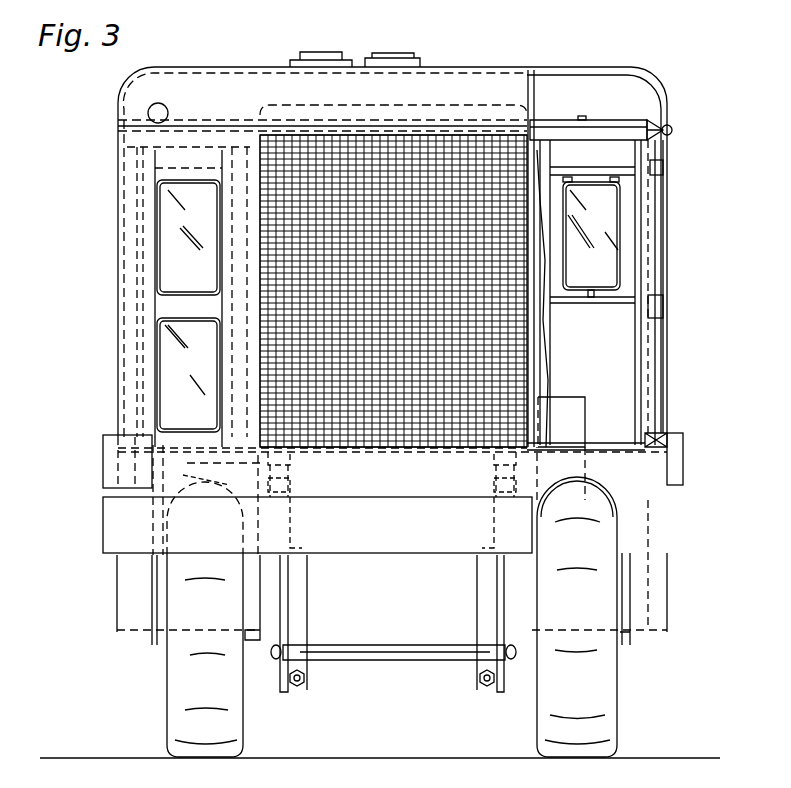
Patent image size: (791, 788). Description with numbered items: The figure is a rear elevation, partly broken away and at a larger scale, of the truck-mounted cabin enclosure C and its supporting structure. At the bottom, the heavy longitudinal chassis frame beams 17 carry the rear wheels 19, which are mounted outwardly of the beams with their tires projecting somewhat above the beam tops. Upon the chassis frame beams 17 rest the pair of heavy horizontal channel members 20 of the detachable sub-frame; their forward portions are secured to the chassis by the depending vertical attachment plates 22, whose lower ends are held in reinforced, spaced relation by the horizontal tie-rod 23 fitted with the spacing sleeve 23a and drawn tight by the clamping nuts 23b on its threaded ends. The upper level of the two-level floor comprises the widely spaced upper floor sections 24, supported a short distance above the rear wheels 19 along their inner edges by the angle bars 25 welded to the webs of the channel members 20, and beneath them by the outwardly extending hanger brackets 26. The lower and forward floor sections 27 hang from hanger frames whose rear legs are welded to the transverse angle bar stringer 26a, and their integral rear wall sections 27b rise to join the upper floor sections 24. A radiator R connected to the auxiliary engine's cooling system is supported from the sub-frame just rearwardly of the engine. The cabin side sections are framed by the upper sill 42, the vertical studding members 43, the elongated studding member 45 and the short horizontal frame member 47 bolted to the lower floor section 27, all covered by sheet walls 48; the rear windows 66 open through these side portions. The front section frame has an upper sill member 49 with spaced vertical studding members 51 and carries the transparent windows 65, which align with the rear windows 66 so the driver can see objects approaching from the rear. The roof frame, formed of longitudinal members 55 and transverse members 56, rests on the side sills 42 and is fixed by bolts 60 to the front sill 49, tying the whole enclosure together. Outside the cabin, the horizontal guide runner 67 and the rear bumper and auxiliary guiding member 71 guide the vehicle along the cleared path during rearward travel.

The cabin enclosure C is at (106, 226).
The radiator R is at (329, 128).
The chassis frame beams 17 is at (300, 506).
The rear wheels 19 is at (182, 700).
The channel members 20 is at (292, 476).
The vertical attachment plates 22 is at (298, 604).
The tie-rod 23 is at (526, 656).
The spacing sleeve 23a is at (437, 657).
The clamping nuts 23b is at (275, 660).
The upper floor sections 24 is at (605, 445).
The angle bars 25 is at (494, 488).
The hanger brackets 26 is at (369, 500).
The angle bar stringer 26a is at (206, 432).
The lower floor sections 27 is at (590, 625).
The rear wall sections 27b is at (127, 608).
The top member or sill 42 is at (665, 136).
The vertical studding members 43 is at (656, 368).
The elongated vertical studding member 45 is at (655, 583).
The short horizontal frame member 47 is at (660, 625).
The walls 48 is at (117, 262).
The upper sill member 49 is at (612, 145).
The vertical studding members 51 is at (627, 216).
The longitudinal roof frame members 55 is at (664, 124).
The transverse roof frame members 56 is at (550, 124).
The bolts 60 is at (583, 118).
The transparent windows 65 is at (610, 278).
The rear windows 66 is at (180, 283).
The guide runner 67 is at (104, 468).
The rear bumper and auxiliary guiding member 71 is at (94, 534).